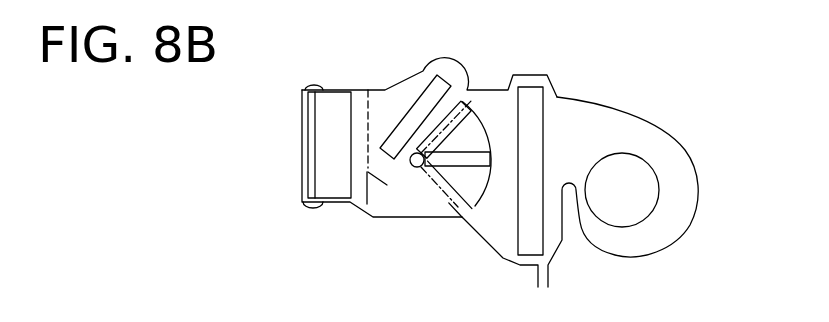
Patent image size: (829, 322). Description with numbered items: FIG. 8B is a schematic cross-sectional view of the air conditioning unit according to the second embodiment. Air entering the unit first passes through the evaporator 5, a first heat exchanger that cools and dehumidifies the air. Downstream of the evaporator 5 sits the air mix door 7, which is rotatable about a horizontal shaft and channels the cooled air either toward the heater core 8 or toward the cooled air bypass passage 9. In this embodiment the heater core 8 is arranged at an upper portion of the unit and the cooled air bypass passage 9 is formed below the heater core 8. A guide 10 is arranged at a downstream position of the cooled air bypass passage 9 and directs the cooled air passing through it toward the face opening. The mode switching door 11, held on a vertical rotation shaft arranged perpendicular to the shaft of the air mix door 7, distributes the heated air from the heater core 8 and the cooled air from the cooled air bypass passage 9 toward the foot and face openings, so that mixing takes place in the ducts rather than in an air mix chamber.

The evaporator 5 is at (530, 97).
The air mix door 7 is at (457, 172).
The heater core 8 is at (435, 92).
The cooled air bypass passage 9 is at (413, 198).
The guide 10 is at (378, 190).
The mode switching door 11 is at (337, 123).